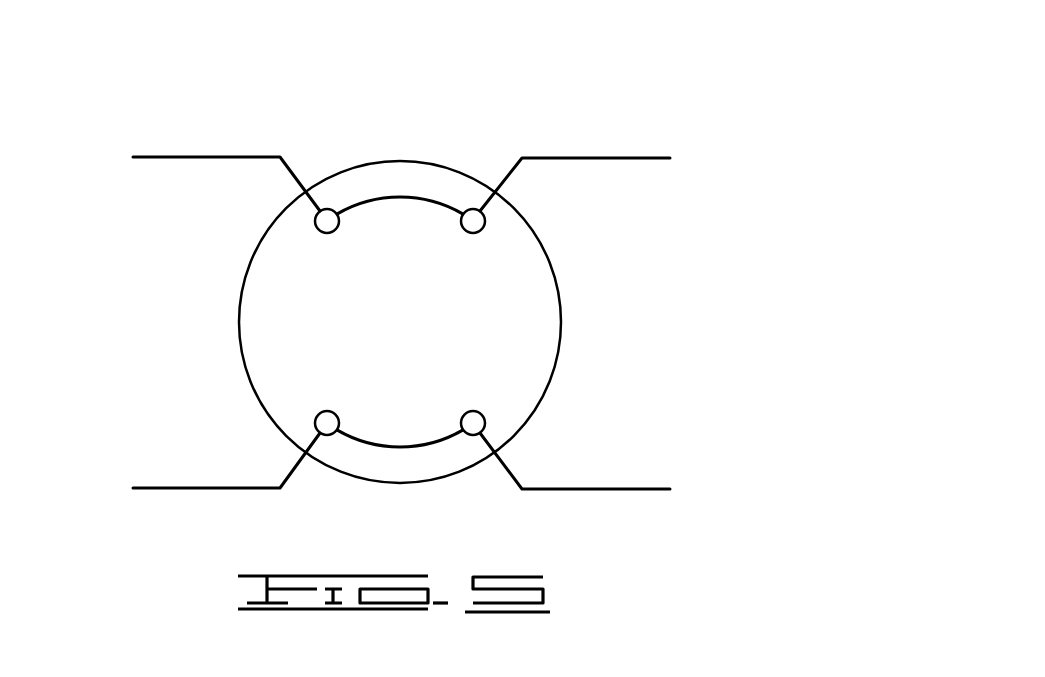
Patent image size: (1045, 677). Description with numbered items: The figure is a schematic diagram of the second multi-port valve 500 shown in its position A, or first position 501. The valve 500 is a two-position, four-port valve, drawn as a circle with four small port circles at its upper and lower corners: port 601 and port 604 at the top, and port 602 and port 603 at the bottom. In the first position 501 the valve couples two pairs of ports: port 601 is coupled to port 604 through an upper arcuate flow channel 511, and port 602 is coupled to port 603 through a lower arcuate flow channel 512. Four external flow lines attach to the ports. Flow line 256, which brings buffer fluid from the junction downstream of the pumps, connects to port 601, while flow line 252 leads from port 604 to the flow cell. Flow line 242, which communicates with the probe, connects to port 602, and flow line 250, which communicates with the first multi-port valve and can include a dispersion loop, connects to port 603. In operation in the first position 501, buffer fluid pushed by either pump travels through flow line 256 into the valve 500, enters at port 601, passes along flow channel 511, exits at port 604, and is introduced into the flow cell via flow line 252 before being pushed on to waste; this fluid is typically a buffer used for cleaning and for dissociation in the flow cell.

The first position 501 is at (725, 65).
The second multi-port valve 500 is at (240, 308).
The flow channel 511 is at (400, 197).
The flow channel 512 is at (400, 449).
The flow line 256 is at (185, 157).
The flow line 252 is at (544, 157).
The flow line 242 is at (162, 490).
The flow line 250 is at (635, 490).
The port 601 is at (315, 220).
The port 604 is at (485, 222).
The port 602 is at (315, 422).
The port 603 is at (485, 422).